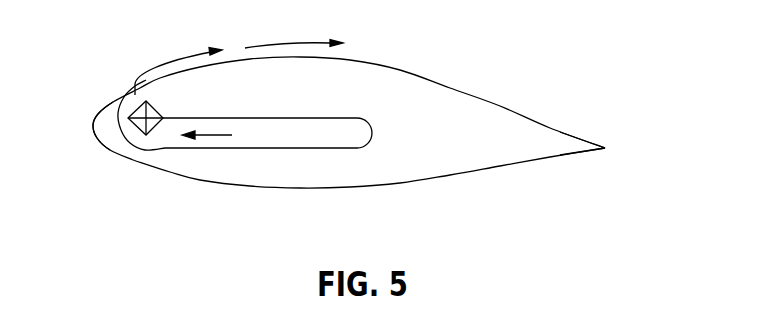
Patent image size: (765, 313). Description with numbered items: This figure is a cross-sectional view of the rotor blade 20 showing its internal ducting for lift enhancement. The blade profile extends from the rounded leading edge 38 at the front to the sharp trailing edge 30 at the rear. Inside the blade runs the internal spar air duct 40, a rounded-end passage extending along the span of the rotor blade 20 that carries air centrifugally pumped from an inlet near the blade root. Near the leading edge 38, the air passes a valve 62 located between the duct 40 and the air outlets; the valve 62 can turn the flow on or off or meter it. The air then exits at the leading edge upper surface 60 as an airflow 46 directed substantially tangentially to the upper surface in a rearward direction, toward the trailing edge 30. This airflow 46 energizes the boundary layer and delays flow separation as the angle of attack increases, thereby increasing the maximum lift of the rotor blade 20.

The rotor blade 20 is at (203, 180).
The trailing edge 30 is at (606, 148).
The leading edge 38 is at (95, 123).
The internal spar air duct 40 is at (345, 117).
The airflow 46 is at (182, 56).
The leading edge upper surface 60 is at (110, 98).
The valve 62 is at (132, 148).